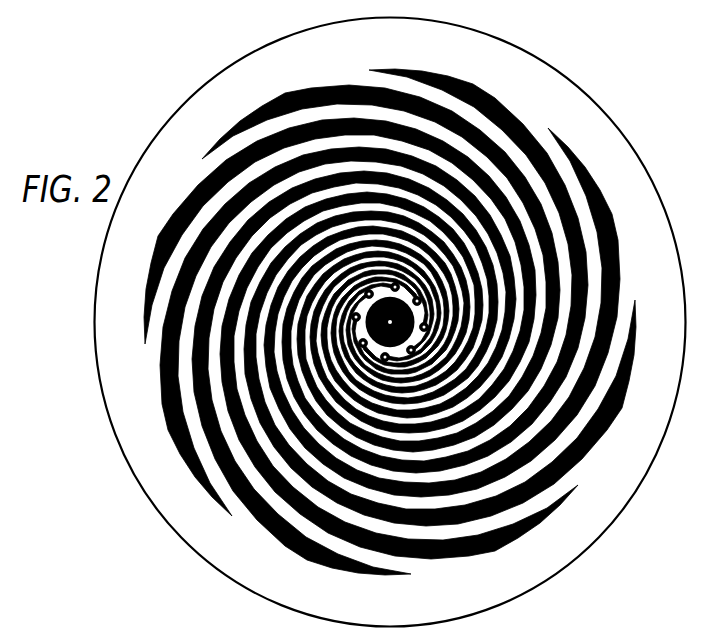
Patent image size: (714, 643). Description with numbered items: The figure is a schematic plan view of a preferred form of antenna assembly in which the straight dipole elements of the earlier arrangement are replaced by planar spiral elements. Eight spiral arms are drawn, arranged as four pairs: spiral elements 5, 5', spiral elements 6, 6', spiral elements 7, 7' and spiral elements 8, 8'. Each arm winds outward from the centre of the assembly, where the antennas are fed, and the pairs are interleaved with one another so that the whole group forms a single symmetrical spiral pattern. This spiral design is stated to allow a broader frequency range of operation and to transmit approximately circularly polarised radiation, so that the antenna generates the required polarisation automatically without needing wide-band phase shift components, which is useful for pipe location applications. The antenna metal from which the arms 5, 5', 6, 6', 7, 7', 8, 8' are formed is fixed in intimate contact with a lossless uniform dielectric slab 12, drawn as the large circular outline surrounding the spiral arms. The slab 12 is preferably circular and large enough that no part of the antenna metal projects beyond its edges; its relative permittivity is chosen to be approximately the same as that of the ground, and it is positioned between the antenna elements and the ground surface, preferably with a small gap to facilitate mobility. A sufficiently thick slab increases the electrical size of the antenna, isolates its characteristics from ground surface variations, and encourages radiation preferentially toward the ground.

The planar spiral element 5 is at (435, 253).
The planar spiral element 6 is at (454, 368).
The planar spiral element 7 is at (442, 312).
The planar spiral element 8 is at (401, 375).
The planar spiral element 5' is at (345, 395).
The planar spiral element 6' is at (320, 275).
The planar spiral element 7' is at (338, 337).
The planar spiral element 8' is at (380, 268).
The dielectric slab 12 is at (585, 101).